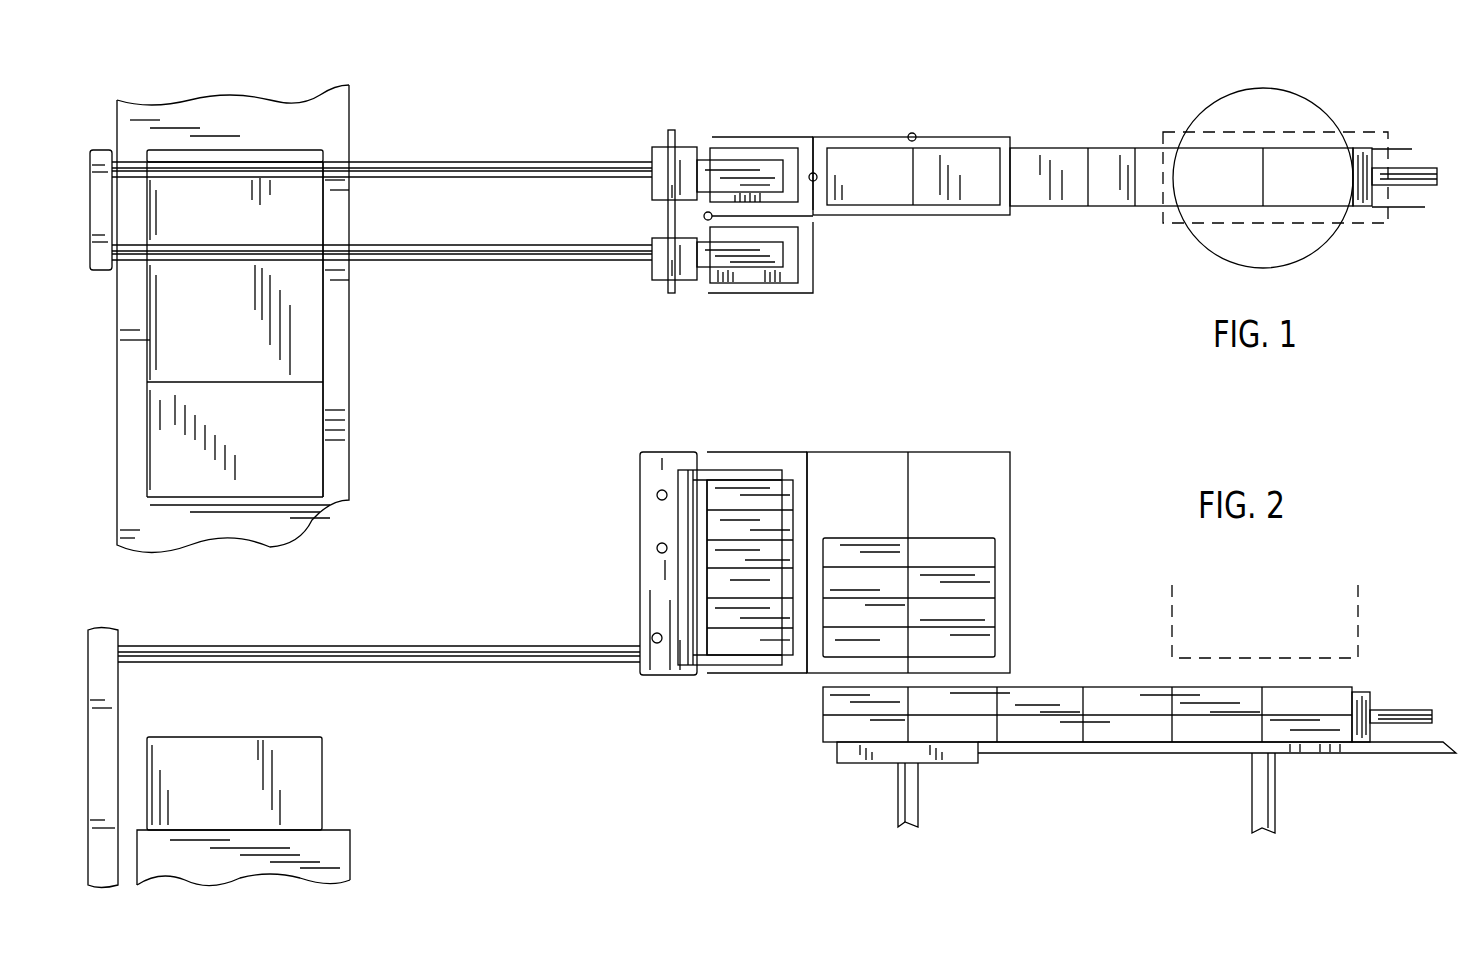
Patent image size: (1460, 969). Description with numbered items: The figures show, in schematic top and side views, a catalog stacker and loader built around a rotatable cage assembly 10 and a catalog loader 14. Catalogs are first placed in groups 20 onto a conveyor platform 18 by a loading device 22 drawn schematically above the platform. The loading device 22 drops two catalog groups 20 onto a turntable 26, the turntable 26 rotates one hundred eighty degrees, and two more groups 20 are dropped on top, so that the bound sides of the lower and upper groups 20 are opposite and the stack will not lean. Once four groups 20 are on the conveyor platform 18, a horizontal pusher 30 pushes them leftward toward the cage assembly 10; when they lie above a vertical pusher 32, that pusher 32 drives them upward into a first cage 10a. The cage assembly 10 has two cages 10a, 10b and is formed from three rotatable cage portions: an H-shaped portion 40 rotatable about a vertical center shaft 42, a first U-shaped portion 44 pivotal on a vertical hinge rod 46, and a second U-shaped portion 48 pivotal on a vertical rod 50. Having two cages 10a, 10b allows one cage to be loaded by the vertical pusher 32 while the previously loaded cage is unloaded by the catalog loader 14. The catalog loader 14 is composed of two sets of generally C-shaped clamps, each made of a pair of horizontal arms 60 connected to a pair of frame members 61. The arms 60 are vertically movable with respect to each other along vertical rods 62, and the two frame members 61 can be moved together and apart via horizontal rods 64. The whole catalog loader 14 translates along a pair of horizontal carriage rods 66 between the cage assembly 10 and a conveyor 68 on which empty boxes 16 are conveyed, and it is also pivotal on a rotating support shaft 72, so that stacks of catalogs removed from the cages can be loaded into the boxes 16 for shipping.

In FIG. 1, the cage assembly 10 is at (833, 118).
In FIG. 2, the cage assembly 10 is at (905, 428).
In FIG. 1, the first cage 10a is at (955, 118).
In FIG. 2, the first cage 10a is at (968, 428).
In FIG. 1, the second cage 10b is at (752, 120).
In FIG. 2, the second cage 10b is at (763, 432).
In FIG. 1, the catalog loader 14 is at (674, 305).
In FIG. 2, the catalog loader 14 is at (663, 440).
In FIG. 1, the empty boxes 16 is at (305, 150).
In FIG. 2, the empty boxes 16 is at (322, 775).
In FIG. 2, the conveyor platform 18 is at (1123, 758).
In FIG. 1, the catalog groups 20 is at (888, 193).
In FIG. 2, the catalog groups 20 is at (985, 553).
In FIG. 1, the loading device 22 is at (1365, 132).
In FIG. 2, the loading device 22 is at (1360, 630).
In FIG. 1, the turntable 26 is at (1258, 268).
In FIG. 2, the turntable 26 is at (1312, 753).
In FIG. 1, the horizontal pusher 30 is at (1365, 210).
In FIG. 2, the horizontal pusher 30 is at (1372, 697).
In FIG. 2, the vertical pusher 32 is at (835, 755).
In FIG. 1, the H-shaped portion 40 is at (775, 137).
In FIG. 1, the vertical center shaft 42 is at (815, 181).
In FIG. 1, the first U-shaped portion 44 is at (1002, 137).
In FIG. 1, the rod 46 is at (912, 133).
In FIG. 1, the second U-shaped portion 48 is at (793, 293).
In FIG. 1, the vertical rod 50 is at (703, 217).
In FIG. 1, the horizontal arms 60 is at (727, 160).
In FIG. 2, the horizontal arms 60 is at (727, 470).
In FIG. 1, the frame members 61 is at (652, 272).
In FIG. 2, the frame members 61 is at (643, 465).
In FIG. 2, the vertical rods 62 is at (715, 668).
In FIG. 1, the horizontal rods 64 is at (665, 135).
In FIG. 2, the horizontal rods 64 is at (657, 496).
In FIG. 1, the horizontal carriage rods 66 is at (410, 162).
In FIG. 2, the horizontal carriage rods 66 is at (460, 648).
In FIG. 1, the conveyor 68 is at (350, 337).
In FIG. 2, the conveyor 68 is at (340, 855).
In FIG. 2, the rotating support shaft 72 is at (654, 634).